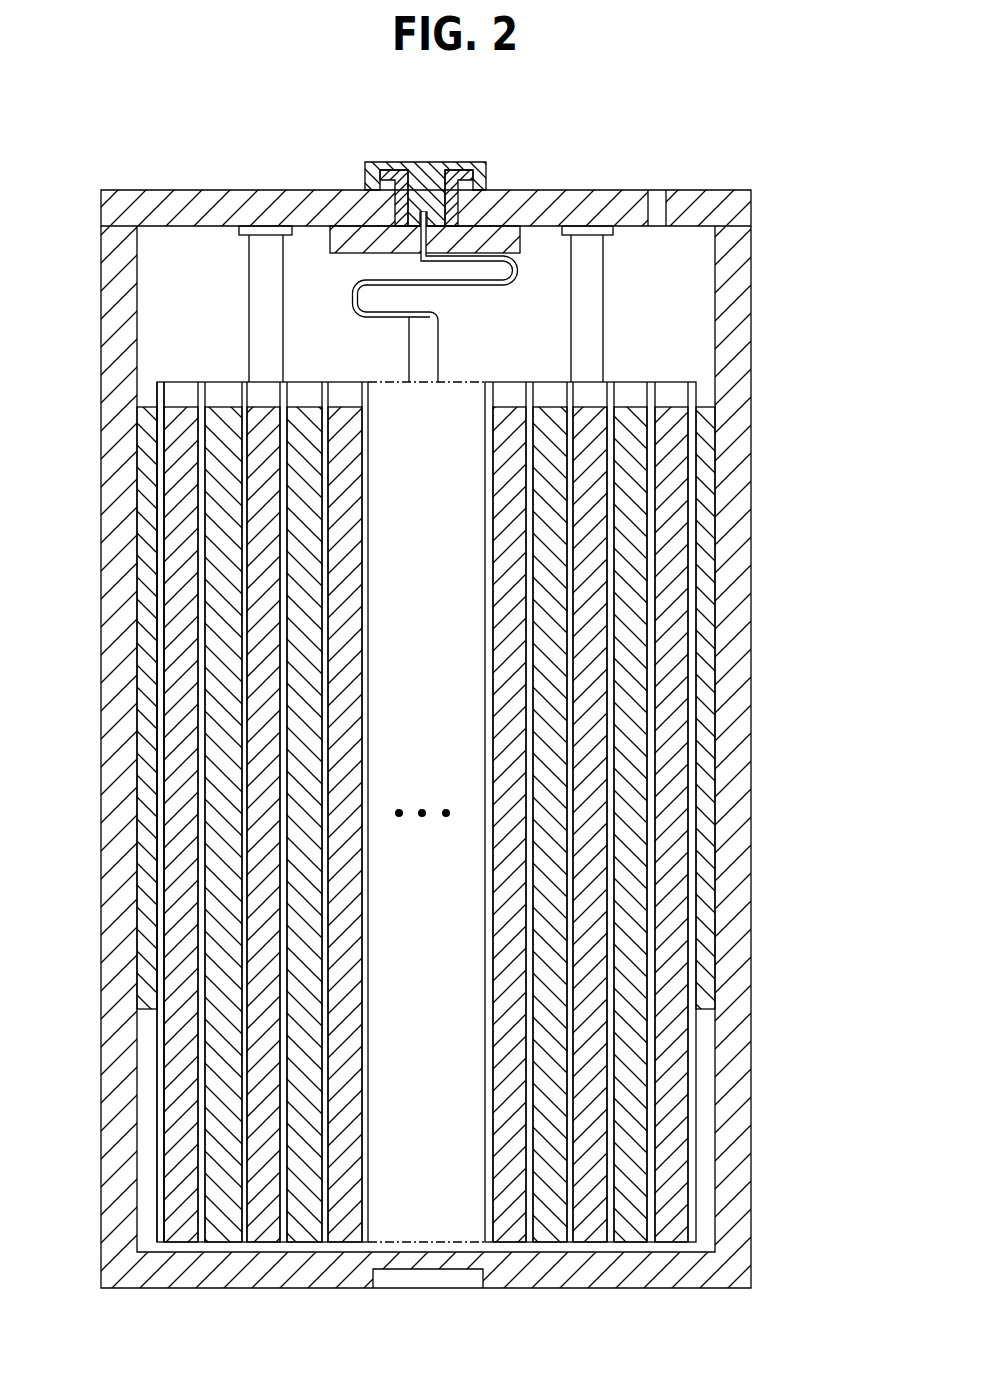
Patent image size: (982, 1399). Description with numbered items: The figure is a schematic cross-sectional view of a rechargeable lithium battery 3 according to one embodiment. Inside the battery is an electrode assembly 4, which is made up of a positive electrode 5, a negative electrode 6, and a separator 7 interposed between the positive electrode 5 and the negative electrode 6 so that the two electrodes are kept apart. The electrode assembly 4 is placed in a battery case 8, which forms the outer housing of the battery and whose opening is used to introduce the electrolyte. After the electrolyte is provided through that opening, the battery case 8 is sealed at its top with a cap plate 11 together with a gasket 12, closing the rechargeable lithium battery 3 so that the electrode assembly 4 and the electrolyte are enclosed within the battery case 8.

The rechargeable lithium battery 3 is at (456, 699).
The electrode assembly 4 is at (426, 727).
The positive electrode 5 is at (683, 1158).
The negative electrode 6 is at (217, 1053).
The separator 7 is at (162, 1158).
The battery case 8 is at (102, 348).
The cap plate 11 is at (555, 190).
The gasket 12 is at (372, 163).